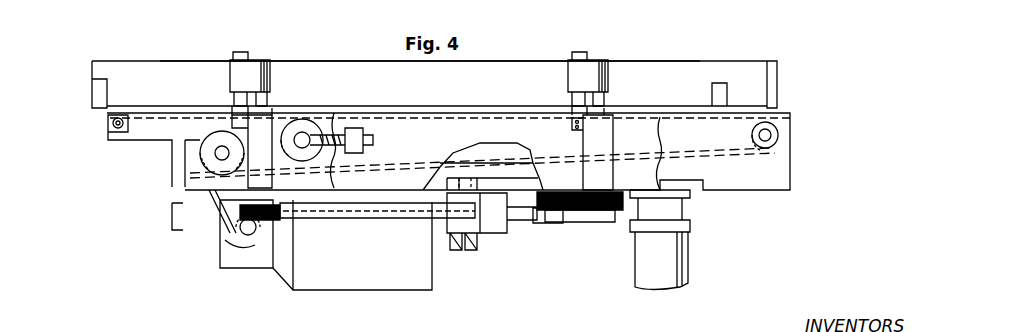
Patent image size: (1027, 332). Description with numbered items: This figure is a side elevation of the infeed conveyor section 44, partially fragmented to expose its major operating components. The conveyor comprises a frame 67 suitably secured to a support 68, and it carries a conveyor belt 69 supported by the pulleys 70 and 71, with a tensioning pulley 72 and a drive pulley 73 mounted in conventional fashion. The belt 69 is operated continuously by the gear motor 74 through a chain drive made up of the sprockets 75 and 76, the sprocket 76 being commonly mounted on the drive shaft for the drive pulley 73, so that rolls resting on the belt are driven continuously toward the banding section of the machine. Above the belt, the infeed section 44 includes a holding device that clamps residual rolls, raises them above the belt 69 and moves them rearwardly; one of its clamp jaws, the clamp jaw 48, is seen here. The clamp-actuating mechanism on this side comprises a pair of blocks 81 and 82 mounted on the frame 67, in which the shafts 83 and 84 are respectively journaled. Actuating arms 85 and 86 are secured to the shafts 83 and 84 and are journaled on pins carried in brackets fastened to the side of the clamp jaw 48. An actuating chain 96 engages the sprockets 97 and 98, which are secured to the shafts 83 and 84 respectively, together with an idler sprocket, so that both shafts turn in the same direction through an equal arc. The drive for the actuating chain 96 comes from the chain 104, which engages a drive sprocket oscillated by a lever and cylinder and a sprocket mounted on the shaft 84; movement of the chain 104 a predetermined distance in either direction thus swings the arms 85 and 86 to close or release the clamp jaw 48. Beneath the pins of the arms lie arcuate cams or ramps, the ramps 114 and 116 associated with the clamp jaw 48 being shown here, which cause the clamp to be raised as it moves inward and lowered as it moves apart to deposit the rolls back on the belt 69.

The infeed conveyor section 44 is at (776, 59).
The clamp jaw 48 is at (440, 97).
The frame 67 is at (777, 176).
The support 68 is at (673, 265).
The conveyor belt 69 is at (690, 122).
The pulley 70 is at (787, 134).
The pulley 71 is at (110, 134).
The tensioning pulley 72 is at (310, 127).
The drive pulley 73 is at (197, 158).
The gear motor 74 is at (340, 287).
The sprocket 75 is at (237, 236).
The sprocket 76 is at (207, 162).
The block 81 is at (272, 120).
The block 82 is at (613, 120).
The shaft 83 is at (273, 100).
The shaft 84 is at (605, 100).
The actuating arm 85 is at (258, 62).
The actuating arm 86 is at (603, 62).
The actuating chain 96 is at (357, 213).
The sprocket 97 is at (267, 233).
The sprocket 98 is at (600, 222).
The chain 104 is at (627, 203).
The ramp 114 is at (232, 108).
The ramp 116 is at (563, 108).